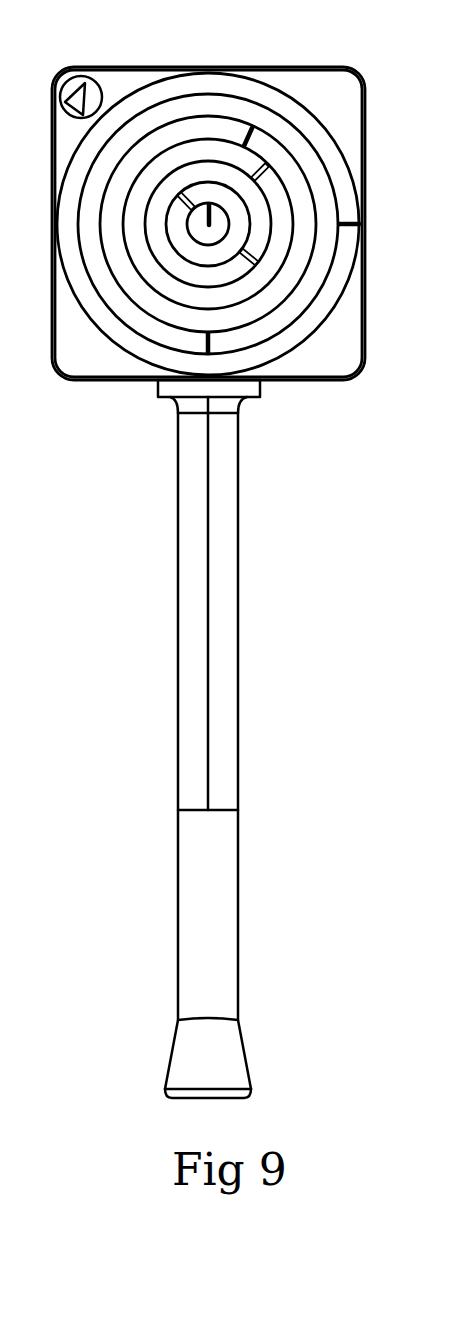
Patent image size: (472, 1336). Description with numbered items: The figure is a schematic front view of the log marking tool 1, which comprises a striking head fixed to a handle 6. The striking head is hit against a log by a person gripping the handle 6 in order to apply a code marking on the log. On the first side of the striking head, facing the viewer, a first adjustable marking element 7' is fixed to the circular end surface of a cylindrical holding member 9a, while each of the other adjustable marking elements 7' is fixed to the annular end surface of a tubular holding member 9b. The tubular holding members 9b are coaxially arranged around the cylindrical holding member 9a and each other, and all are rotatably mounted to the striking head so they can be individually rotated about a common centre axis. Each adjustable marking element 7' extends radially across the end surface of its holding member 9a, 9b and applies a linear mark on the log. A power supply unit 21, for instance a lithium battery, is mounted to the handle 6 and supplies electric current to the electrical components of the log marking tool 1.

The log marking tool 1 is at (202, 551).
The handle 6 is at (228, 665).
The adjustable marking element 7' is at (238, 231).
The cylindrical holding member 9a is at (219, 224).
The tubular holding member 9b is at (148, 325).
The power supply unit 21 is at (233, 1062).